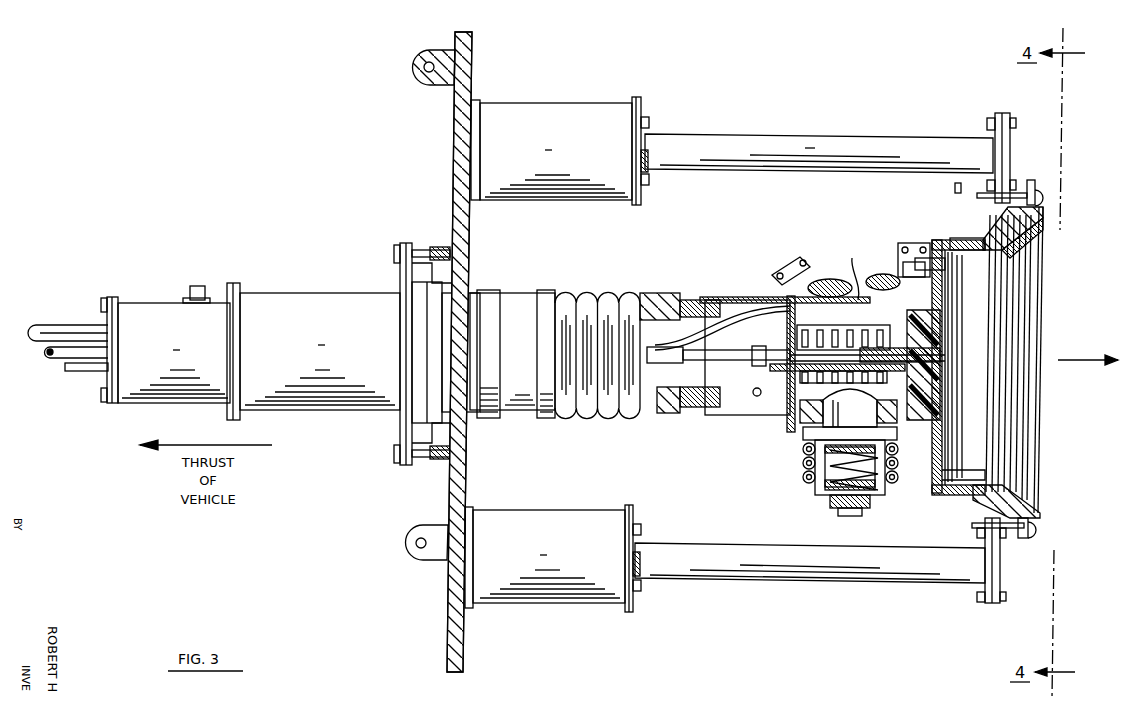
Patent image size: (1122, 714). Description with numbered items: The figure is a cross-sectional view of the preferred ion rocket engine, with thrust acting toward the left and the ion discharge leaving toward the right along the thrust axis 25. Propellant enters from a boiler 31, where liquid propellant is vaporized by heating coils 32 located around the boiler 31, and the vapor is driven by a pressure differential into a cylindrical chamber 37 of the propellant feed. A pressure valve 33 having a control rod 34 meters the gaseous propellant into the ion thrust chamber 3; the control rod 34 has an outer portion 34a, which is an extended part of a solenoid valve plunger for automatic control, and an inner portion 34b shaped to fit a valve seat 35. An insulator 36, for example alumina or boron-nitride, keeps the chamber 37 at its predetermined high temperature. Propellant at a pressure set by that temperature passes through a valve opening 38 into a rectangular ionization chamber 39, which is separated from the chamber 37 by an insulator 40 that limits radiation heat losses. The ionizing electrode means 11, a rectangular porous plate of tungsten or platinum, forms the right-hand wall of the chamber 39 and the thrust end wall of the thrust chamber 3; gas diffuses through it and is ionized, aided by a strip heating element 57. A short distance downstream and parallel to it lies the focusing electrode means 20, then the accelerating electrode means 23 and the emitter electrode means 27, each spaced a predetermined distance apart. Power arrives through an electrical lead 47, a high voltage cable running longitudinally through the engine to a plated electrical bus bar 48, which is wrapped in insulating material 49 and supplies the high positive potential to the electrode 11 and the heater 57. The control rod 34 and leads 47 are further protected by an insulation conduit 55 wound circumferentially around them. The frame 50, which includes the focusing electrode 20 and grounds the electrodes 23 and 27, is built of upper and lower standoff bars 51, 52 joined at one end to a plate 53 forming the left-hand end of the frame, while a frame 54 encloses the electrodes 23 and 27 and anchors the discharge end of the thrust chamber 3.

The ion thrust chamber 3 is at (719, 280).
The ionizing electrode means 11 is at (983, 227).
The focusing electrode means 20 is at (1040, 220).
The accelerating electrode means 23 is at (1012, 478).
The thrust axis 25 is at (1042, 360).
The emitter electrode means 27 is at (1030, 312).
The boiler 31 is at (803, 457).
The heating coils 32 is at (811, 474).
The pressure valve 33 is at (915, 361).
The control rod 34 is at (740, 360).
The outer portion of control rod 34a is at (52, 357).
The inner portion of control rod 34b is at (848, 408).
The valve seat 35 is at (928, 422).
The insulator 36 is at (885, 280).
The cylindrical chamber 37 is at (807, 390).
The valve opening 38 is at (905, 356).
The ionization chamber 39 is at (975, 395).
The insulator 40 is at (933, 427).
The electrical lead 47 is at (30, 329).
The electrical bus bar 48 is at (826, 296).
The insulating material 49 is at (930, 262).
The frame 50 is at (1028, 183).
The standoff bar 51 is at (683, 152).
The standoff bar 52 is at (712, 566).
The plate 53 is at (451, 650).
The frame 54 is at (1040, 240).
The insulation conduit 55 is at (586, 385).
The strip heating element 57 is at (988, 280).